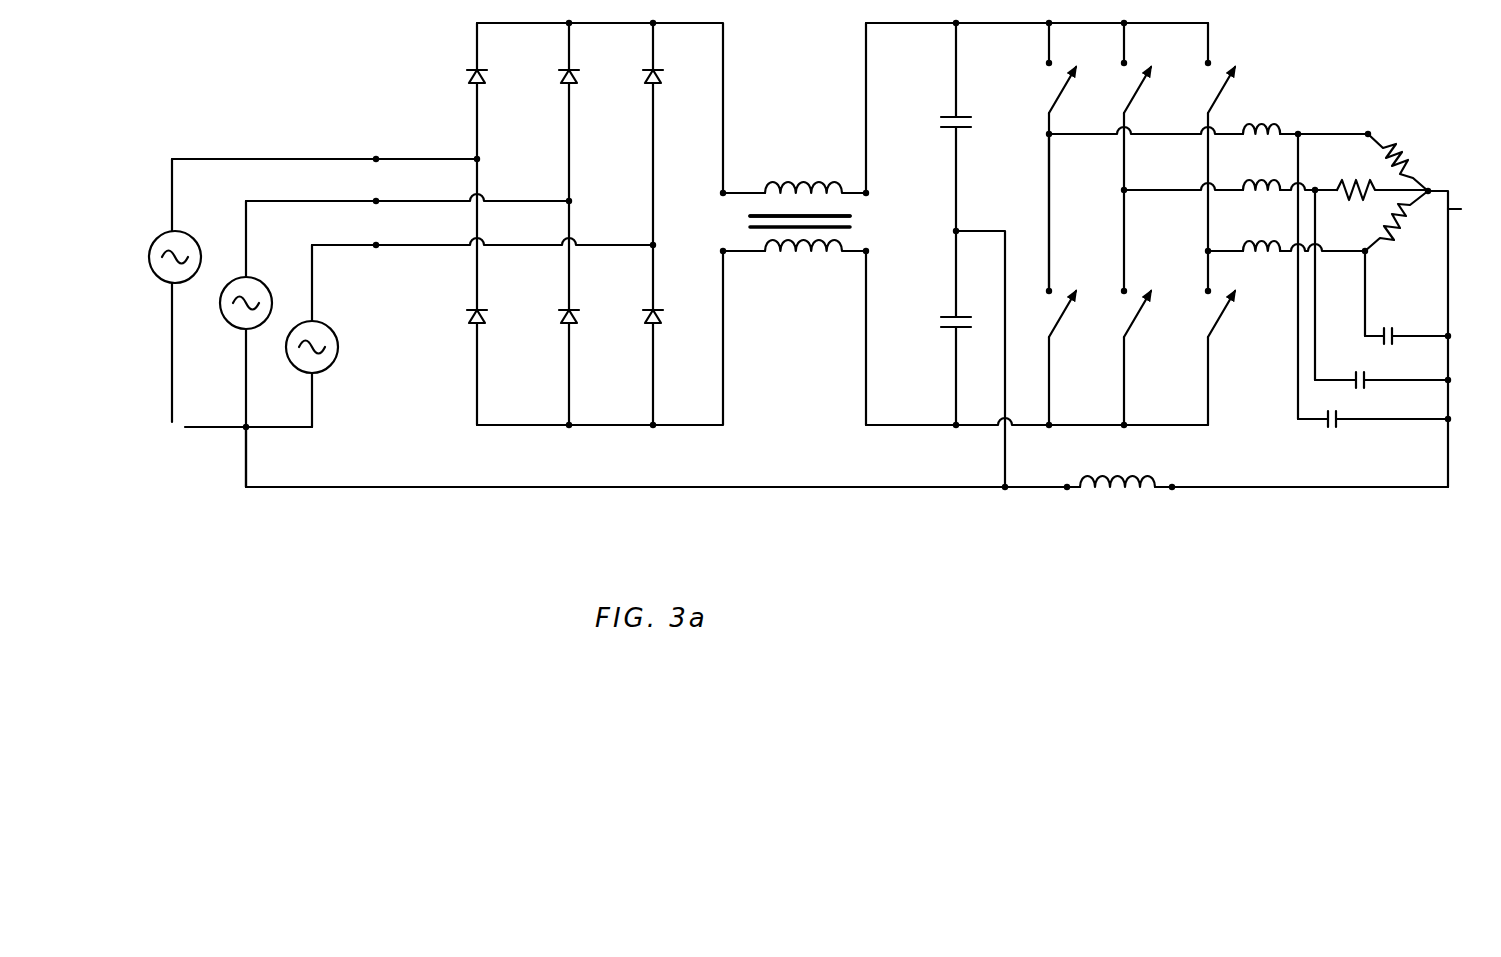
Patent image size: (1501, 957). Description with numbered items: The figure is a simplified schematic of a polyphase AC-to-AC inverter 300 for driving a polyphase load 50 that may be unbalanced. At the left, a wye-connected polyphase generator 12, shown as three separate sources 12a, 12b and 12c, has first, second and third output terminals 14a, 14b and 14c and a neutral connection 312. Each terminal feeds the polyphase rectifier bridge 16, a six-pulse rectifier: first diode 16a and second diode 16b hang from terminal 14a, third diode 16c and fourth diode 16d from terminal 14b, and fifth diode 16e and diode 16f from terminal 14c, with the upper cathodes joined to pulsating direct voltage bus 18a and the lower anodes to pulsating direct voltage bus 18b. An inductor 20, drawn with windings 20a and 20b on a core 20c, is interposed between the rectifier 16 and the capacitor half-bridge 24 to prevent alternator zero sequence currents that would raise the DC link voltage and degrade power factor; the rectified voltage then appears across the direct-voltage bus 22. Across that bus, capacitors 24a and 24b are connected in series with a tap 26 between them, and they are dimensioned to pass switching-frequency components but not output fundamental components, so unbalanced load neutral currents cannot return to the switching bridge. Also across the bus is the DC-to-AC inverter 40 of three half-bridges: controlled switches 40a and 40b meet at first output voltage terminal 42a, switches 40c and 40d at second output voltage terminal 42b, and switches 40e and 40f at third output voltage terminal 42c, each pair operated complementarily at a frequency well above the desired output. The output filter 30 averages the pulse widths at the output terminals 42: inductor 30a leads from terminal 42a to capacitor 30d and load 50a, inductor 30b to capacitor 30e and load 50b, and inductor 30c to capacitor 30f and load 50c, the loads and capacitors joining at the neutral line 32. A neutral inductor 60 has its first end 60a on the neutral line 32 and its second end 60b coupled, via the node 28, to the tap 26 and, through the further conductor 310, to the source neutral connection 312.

The polyphase generator 12 is at (272, 323).
The source 12a is at (186, 236).
The source 12b is at (258, 280).
The source 12c is at (330, 335).
The terminal 14a is at (376, 157).
The terminal 14b is at (376, 201).
The terminal 14c is at (378, 246).
The polyphase rectifier bridge 16 is at (627, 139).
The first diode 16a is at (469, 70).
The second diode 16b is at (471, 328).
The third diode 16c is at (576, 78).
The fourth diode 16d is at (560, 326).
The fifth diode 16e is at (662, 78).
The diode 16f is at (646, 324).
The pulsating direct voltage bus 18a is at (722, 193).
The pulsating direct voltage bus 18b is at (722, 250).
The inductor 20 is at (819, 141).
The transformer primary winding 20a is at (808, 184).
The transformer secondary winding 20b is at (796, 253).
The transformer core 20c is at (750, 216).
The direct-voltage bus 22 is at (885, 152).
The capacitor half-bridge 24 is at (940, 72).
The capacitor 24a is at (942, 112).
The capacitor 24b is at (946, 327).
The tap 26 is at (966, 229).
The neutral connection line 28 is at (1001, 462).
The output filter 30 is at (1322, 100).
The inductor 30a is at (1258, 131).
The inductor 30b is at (1260, 186).
The inductor 30c is at (1274, 244).
The capacitor 30d is at (1342, 432).
The second capacitor 30e is at (1364, 378).
The third capacitor 30f is at (1392, 336).
The neutral line 32 is at (1473, 211).
The DC-to-AC inverter 40 is at (1181, 61).
The controlled switch 40a is at (1060, 102).
The controlled switch 40b is at (1080, 290).
The controlled switch 40c is at (1134, 80).
The controlled switch 40d is at (1154, 290).
The controlled switch 40e is at (1236, 78).
The controlled switch 40f is at (1238, 300).
The output terminals 42 is at (1091, 182).
The first output voltage terminal 42a is at (1048, 134).
The second output voltage terminal 42b is at (1124, 190).
The third output voltage terminal 42c is at (1218, 255).
The load 50 is at (1457, 110).
The load 50a is at (1410, 150).
The load 50b is at (1370, 190).
The load 50c is at (1402, 230).
The neutral inductor 60 is at (1118, 492).
The first end 60a is at (1174, 492).
The second end 60b is at (1066, 496).
The polyphase AC-to-AC inverter 300 is at (578, 552).
The conductor 310 is at (614, 486).
The neutral connection 312 is at (242, 430).